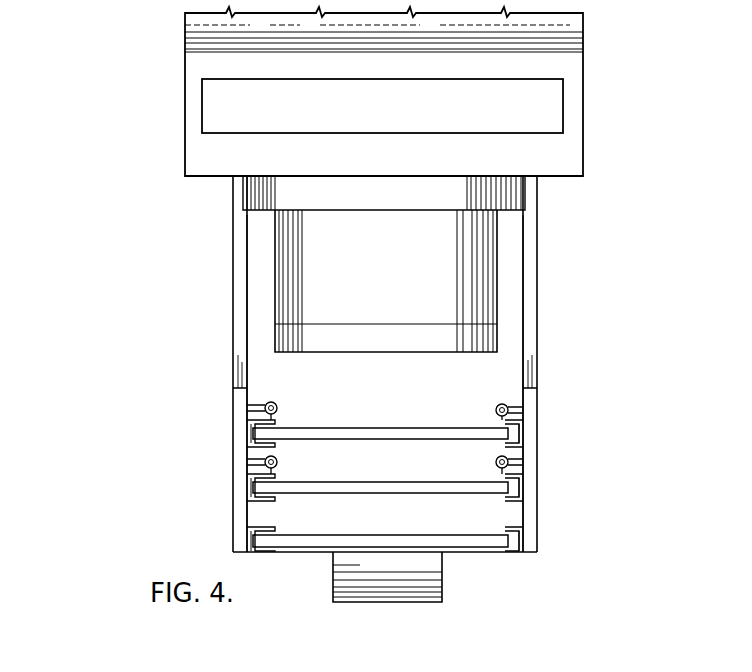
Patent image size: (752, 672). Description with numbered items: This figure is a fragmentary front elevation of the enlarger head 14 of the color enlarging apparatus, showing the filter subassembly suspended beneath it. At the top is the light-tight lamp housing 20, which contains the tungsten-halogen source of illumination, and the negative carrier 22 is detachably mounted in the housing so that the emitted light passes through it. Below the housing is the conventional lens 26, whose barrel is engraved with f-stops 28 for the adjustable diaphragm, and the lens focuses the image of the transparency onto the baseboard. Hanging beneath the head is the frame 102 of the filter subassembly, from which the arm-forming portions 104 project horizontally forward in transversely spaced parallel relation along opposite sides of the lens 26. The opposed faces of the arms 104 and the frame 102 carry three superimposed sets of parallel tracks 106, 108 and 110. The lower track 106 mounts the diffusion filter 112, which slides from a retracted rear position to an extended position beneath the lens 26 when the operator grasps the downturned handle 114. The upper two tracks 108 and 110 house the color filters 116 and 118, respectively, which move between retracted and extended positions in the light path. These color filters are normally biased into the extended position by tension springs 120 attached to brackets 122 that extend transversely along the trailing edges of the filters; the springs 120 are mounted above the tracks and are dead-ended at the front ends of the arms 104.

The head 14 is at (148, 100).
The lamp housing 20 is at (583, 13).
The negative carrier 22 is at (555, 98).
The lens 26 is at (483, 253).
The f-stops 28 is at (405, 297).
The frame 102 is at (235, 322).
The arm-forming portions 104 is at (235, 458).
The lower track 106 is at (500, 528).
The track 108 is at (504, 496).
The track 110 is at (515, 443).
The diffusion filter 112 is at (374, 535).
The downturned handle 114 is at (437, 571).
The color filter 116 is at (380, 482).
The color filter 118 is at (392, 428).
The tension springs 120 is at (276, 402).
The brackets 122 is at (495, 418).